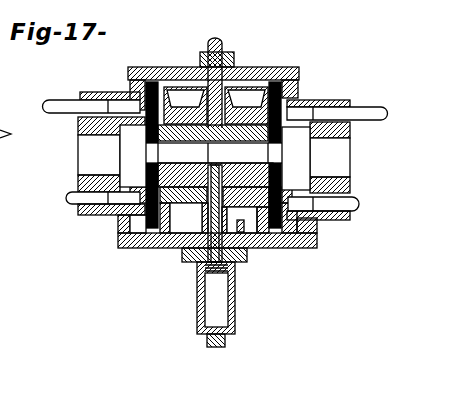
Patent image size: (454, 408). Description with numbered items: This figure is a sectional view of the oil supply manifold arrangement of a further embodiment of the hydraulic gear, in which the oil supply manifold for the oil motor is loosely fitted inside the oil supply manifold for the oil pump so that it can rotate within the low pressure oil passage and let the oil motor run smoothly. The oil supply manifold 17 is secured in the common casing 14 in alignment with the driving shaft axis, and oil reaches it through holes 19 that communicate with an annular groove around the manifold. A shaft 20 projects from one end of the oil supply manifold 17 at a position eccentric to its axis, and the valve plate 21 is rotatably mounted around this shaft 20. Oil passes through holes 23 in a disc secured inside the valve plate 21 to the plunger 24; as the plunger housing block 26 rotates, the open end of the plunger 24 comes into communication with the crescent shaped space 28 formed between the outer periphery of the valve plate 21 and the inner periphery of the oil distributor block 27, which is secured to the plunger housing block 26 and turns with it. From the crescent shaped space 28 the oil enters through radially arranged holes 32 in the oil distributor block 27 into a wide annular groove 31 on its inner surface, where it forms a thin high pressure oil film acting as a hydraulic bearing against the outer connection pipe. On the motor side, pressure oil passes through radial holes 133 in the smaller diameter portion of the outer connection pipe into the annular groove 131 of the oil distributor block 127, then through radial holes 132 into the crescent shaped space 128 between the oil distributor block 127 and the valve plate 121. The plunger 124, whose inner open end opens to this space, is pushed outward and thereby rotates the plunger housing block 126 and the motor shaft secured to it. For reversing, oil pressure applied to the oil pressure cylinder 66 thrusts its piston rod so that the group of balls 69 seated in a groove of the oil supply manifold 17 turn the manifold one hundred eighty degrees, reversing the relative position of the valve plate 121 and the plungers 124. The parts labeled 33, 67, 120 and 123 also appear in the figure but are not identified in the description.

The common casing 14 is at (177, 248).
The oil supply manifold 17 is at (168, 228).
The holes 19 is at (220, 40).
The shaft 20 is at (148, 140).
The valve plate 21 is at (120, 236).
The holes 23 is at (135, 100).
The plunger 24 is at (53, 113).
The plunger housing block 26 is at (78, 184).
The oil distributor block 27 is at (186, 218).
The crescent shaped space 28 is at (152, 228).
The annular groove 31 is at (186, 120).
The radially arranged holes 32 is at (154, 82).
The band left 33 is at (168, 143).
The oil pressure cylinder 66 is at (236, 306).
The bolt threads 67 is at (238, 262).
The group of balls 69 is at (216, 150).
The right chamber 120 is at (282, 133).
The valve plate 121 is at (304, 250).
The right collar 123 is at (300, 102).
The plunger 124 is at (378, 123).
The plunger housing block 126 is at (352, 182).
The oil distributor block 127 is at (299, 68).
The crescent shaped space 128 is at (279, 232).
The annular groove 131 is at (246, 120).
The radial holes 132 is at (266, 82).
The radial holes 133 is at (250, 141).